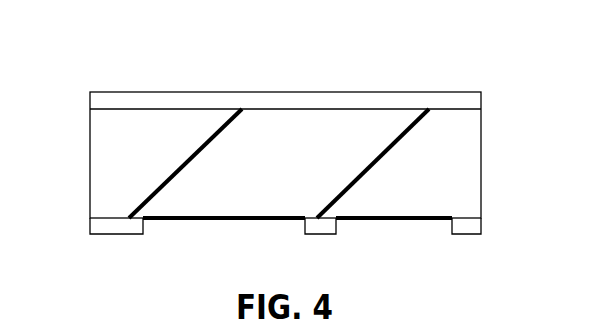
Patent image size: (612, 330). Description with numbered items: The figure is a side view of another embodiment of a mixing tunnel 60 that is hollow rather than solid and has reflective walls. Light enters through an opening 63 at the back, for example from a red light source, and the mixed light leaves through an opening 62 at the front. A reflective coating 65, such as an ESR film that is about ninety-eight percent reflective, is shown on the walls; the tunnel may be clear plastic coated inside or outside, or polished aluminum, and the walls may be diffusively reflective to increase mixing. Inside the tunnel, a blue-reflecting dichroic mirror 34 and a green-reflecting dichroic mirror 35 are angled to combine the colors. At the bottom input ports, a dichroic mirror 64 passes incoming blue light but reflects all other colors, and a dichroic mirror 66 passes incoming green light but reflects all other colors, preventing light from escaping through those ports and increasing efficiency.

The mixing tunnel 60 is at (333, 75).
The reflective coating 65 is at (197, 93).
The opening at the back 63 is at (90, 165).
The opening at the front 62 is at (481, 165).
The dichroic mirror 34 is at (206, 142).
The dichroic mirror 35 is at (383, 153).
The dichroic mirror 64 is at (265, 217).
The dichroic mirror 66 is at (417, 217).